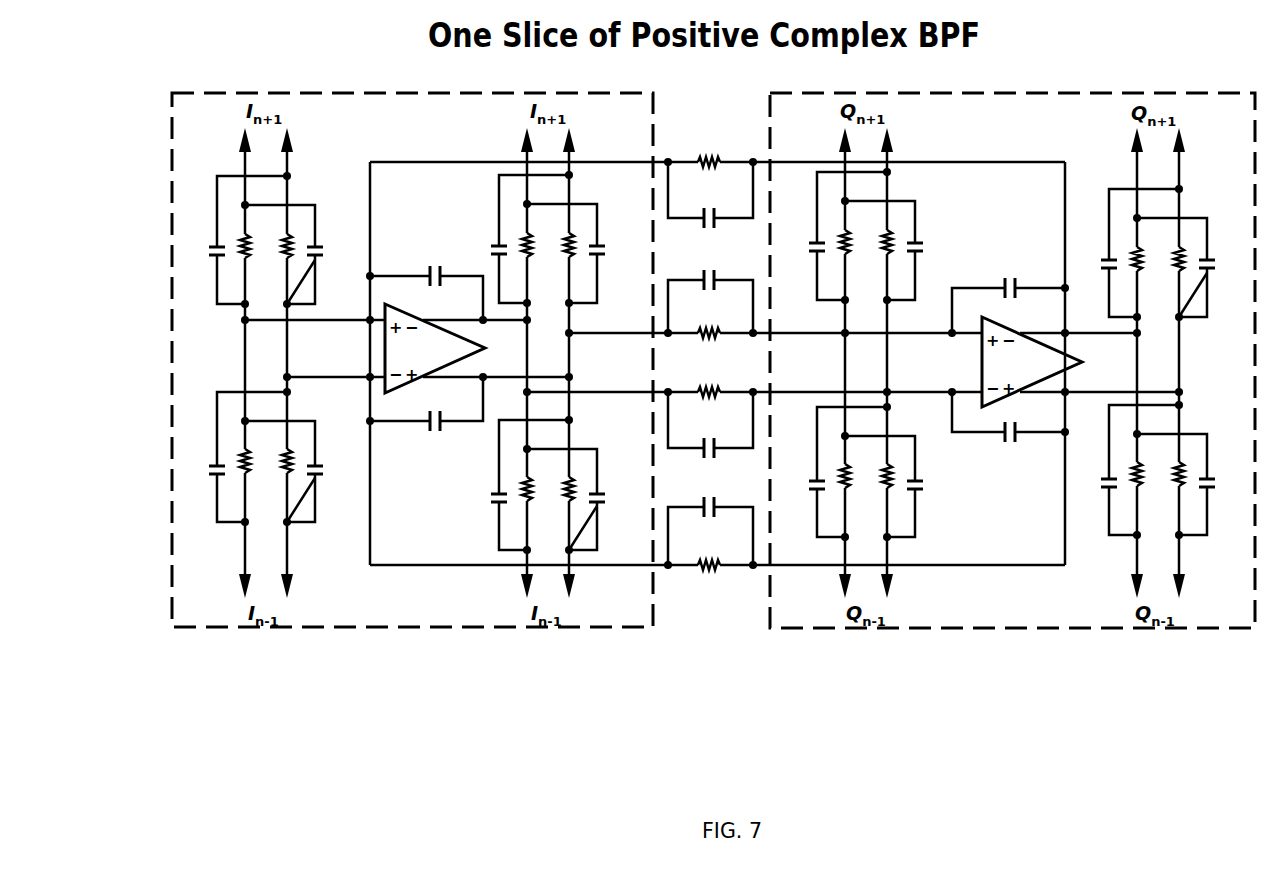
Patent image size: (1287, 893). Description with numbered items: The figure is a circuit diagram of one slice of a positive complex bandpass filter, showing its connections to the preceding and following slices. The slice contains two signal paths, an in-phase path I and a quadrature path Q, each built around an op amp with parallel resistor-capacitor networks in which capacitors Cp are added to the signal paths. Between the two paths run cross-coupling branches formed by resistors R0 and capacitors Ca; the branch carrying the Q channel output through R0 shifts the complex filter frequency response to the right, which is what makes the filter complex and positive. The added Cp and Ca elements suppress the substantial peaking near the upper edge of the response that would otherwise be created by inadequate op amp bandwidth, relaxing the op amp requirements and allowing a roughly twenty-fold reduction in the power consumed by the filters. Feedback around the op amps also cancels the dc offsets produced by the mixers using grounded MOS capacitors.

The capacitor Cp is at (711, 361).
The capacitor Ca is at (710, 363).
The resistor R0 is at (710, 367).
The I channel I is at (412, 360).
The Q channel Q is at (1012, 360).